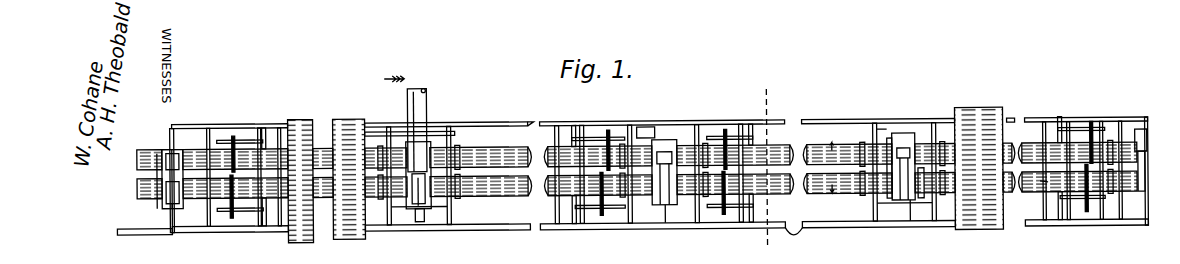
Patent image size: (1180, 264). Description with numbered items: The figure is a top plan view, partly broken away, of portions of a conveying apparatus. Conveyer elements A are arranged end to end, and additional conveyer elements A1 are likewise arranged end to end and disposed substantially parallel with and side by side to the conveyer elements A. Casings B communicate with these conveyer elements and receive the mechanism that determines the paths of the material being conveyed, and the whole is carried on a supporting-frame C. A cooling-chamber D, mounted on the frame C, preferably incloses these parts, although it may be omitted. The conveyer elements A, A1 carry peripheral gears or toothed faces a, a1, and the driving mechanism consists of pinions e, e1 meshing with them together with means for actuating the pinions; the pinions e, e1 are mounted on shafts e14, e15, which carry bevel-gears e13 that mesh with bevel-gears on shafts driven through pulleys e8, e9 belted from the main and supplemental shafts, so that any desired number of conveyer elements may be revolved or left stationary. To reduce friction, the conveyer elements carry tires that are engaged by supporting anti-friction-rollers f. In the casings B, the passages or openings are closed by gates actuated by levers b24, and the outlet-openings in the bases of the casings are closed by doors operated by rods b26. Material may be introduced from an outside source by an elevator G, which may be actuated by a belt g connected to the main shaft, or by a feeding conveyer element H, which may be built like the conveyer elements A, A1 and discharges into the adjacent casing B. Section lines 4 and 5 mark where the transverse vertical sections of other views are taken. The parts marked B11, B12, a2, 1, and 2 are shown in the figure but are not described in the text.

The conveyer elements A is at (550, 148).
The additional conveyer elements A1 is at (790, 193).
The casings B is at (179, 146).
The bearing cap B11 is at (172, 146).
The bearing housing wall B12 is at (162, 150).
The levers b24 is at (176, 212).
The rods b26 is at (668, 205).
The supporting-frame C is at (480, 121).
The cooling-chamber D is at (500, 122).
The conveyer element H is at (426, 89).
The section line 5 5 is at (410, 85).
The belt g is at (420, 222).
The elevator G is at (646, 127).
The anti-friction-rollers f is at (380, 144).
The peripheral gears or toothed faces a is at (1122, 113).
The peripheral gears or toothed faces a1 is at (1085, 200).
The shaft coupling collar a2 is at (457, 144).
The pinions e is at (234, 133).
The pinions e1 is at (232, 215).
The bevel-gears e13 is at (264, 125).
The shaft e14 is at (233, 137).
The shaft e15 is at (240, 208).
The pulley e8 is at (298, 146).
The pulley e9 is at (527, 222).
The section line 4 4 is at (769, 167).
The direction arrow 1 is at (830, 143).
The direction arrow 2 is at (834, 194).